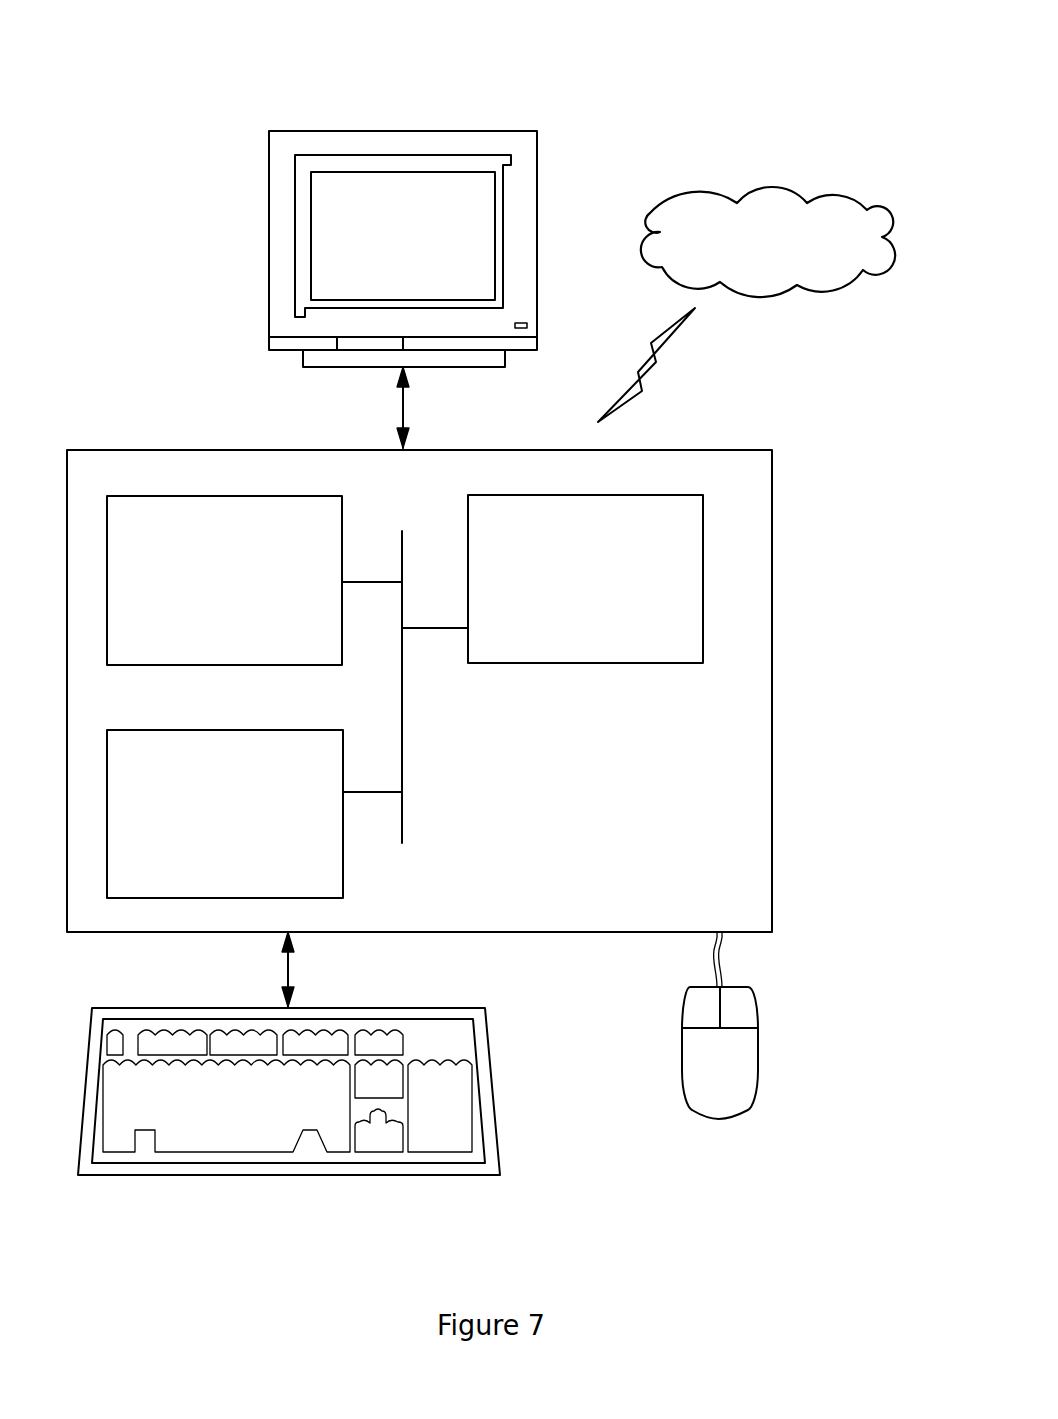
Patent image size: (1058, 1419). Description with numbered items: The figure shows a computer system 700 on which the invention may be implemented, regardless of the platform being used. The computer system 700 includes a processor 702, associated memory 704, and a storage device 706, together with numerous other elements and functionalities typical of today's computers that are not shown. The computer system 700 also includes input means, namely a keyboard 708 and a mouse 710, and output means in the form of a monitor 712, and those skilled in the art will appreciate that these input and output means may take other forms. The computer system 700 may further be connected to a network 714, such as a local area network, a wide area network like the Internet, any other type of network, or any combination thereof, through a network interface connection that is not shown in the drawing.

The computer system 700 is at (805, 40).
The processor 702 is at (582, 592).
The associated memory 704 is at (202, 594).
The storage device 706 is at (202, 829).
The keyboard 708 is at (195, 1134).
The mouse 710 is at (695, 1071).
The monitor 712 is at (379, 252).
The network 714 is at (746, 252).